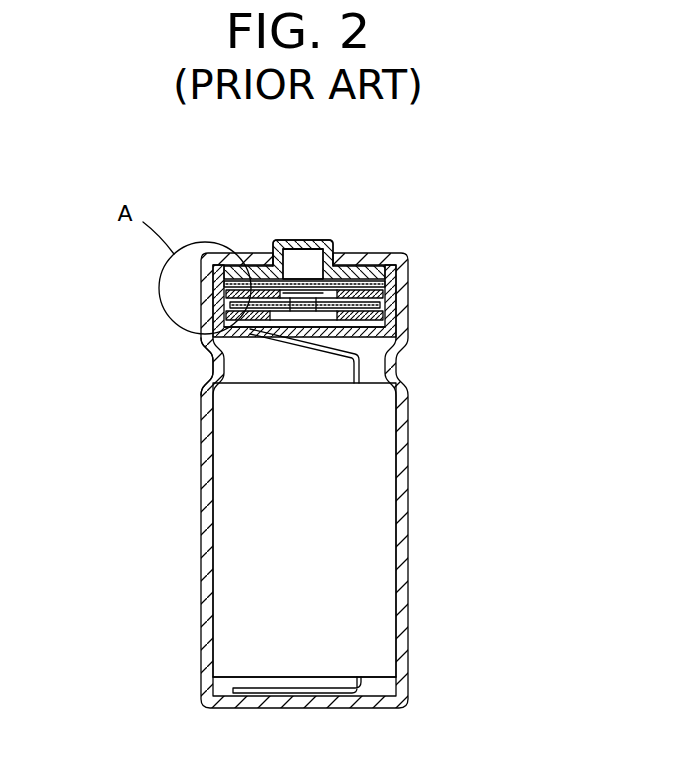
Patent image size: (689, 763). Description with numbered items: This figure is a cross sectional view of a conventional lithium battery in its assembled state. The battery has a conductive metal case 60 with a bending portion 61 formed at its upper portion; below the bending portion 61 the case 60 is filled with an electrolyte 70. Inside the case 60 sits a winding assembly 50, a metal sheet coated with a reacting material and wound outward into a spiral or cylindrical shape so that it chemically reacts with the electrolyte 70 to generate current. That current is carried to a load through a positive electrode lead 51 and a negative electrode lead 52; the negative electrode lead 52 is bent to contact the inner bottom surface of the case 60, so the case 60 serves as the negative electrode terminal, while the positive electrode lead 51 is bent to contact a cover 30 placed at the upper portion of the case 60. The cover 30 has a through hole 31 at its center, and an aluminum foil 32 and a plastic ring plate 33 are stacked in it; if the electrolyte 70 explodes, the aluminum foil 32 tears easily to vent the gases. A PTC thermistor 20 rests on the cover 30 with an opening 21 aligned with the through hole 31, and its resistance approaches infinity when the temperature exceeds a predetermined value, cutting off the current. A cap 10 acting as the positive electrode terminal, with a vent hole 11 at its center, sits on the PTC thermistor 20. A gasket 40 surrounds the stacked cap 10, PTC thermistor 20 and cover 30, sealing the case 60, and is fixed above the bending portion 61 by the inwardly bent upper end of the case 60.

The cap 10 is at (333, 245).
The vent hole 11 is at (296, 247).
The PTC thermistor 20 is at (242, 275).
The opening 21 is at (270, 278).
The cover 30 is at (393, 291).
The through hole 31 is at (325, 297).
The aluminum foil 32 is at (395, 311).
The ring plate 33 is at (393, 326).
The gasket 40 is at (217, 297).
The winding assembly 50 is at (238, 538).
The positive electrode lead 51 is at (365, 373).
The negative electrode lead 52 is at (400, 692).
The case 60 is at (200, 612).
The bending portion 61 is at (210, 362).
The electrolyte 70 is at (222, 690).